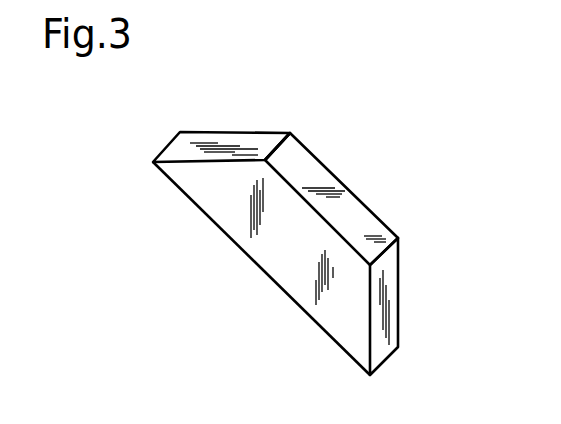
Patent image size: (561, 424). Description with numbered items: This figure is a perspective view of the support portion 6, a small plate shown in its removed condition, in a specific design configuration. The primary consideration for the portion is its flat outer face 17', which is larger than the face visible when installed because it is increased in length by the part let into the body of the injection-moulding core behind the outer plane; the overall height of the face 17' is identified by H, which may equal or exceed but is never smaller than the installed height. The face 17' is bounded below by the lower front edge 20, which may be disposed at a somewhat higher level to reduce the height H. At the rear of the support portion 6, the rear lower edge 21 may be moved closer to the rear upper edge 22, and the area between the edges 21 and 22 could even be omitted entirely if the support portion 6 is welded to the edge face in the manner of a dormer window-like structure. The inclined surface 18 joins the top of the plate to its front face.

The support portion 6 is at (218, 120).
The rear lower edge 21 is at (168, 146).
The rear upper edge 22 is at (271, 160).
The inclined surface 18 is at (342, 208).
The face 17' is at (304, 274).
The lower front edge 20 is at (385, 364).
The overall height H is at (398, 347).